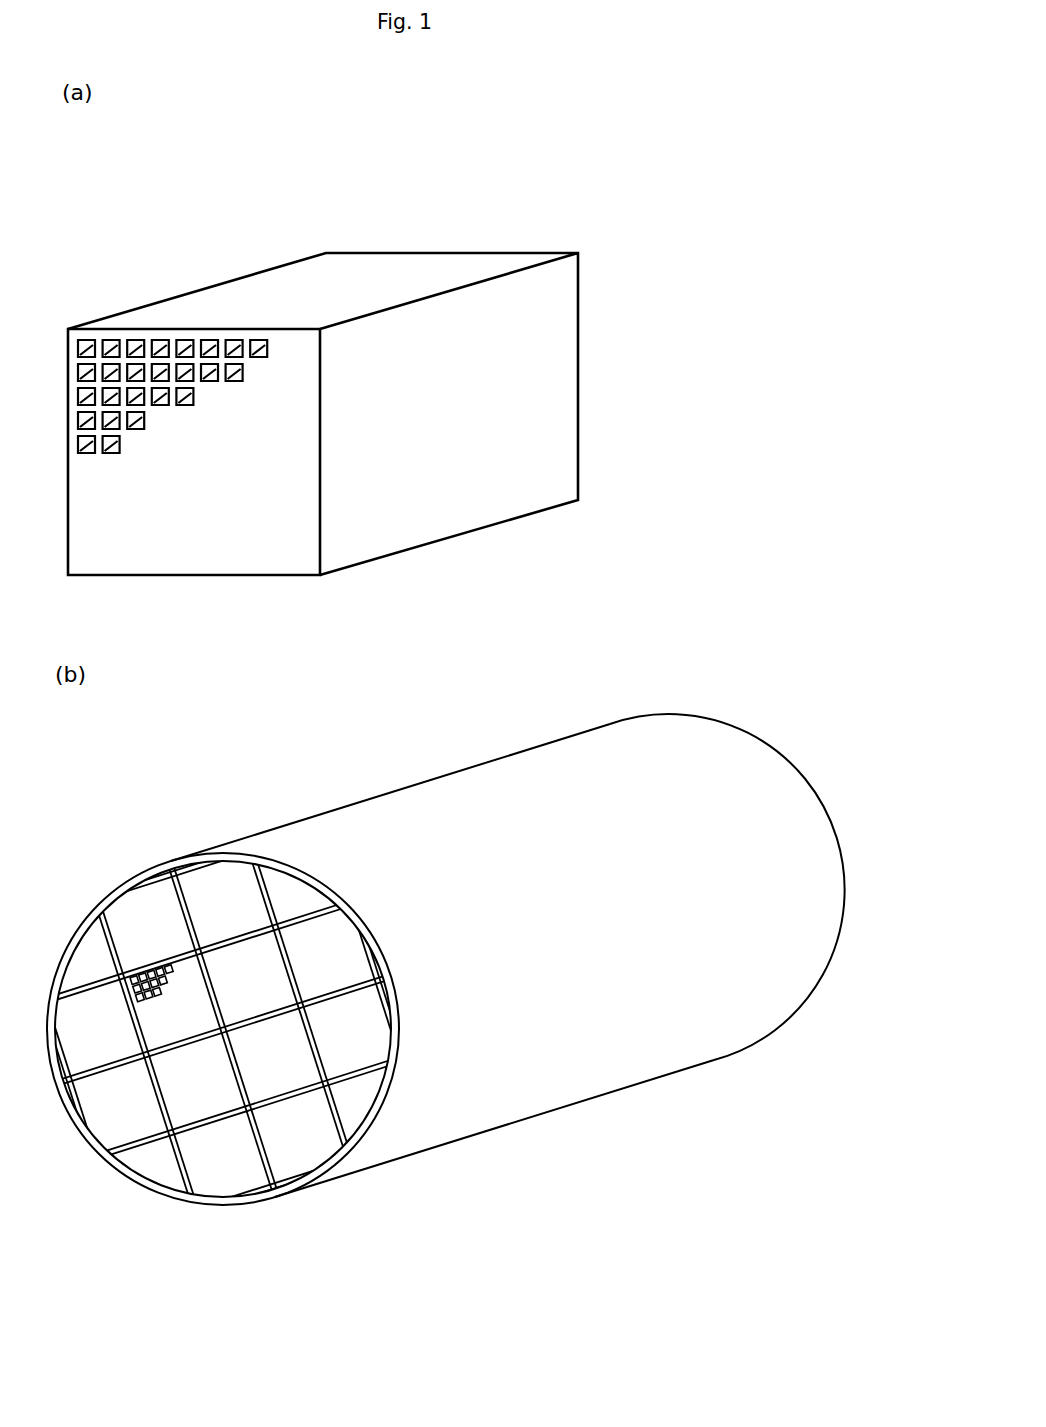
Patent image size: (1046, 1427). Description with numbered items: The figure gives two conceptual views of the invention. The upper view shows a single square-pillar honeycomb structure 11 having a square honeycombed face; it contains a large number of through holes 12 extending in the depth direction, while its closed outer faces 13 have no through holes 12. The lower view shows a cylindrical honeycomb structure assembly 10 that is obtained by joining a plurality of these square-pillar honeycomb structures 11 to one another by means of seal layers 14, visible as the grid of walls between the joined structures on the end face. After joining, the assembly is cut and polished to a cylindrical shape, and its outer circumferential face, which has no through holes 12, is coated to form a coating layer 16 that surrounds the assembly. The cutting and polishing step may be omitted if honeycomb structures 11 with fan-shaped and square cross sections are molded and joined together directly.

The honeycomb structure assembly 10 is at (424, 960).
The honeycomb structure 11 is at (376, 698).
The through holes 12 is at (75, 330).
The closed outer faces 13 is at (320, 287).
The seal layers 14 is at (347, 1113).
The coating layer 16 is at (113, 893).